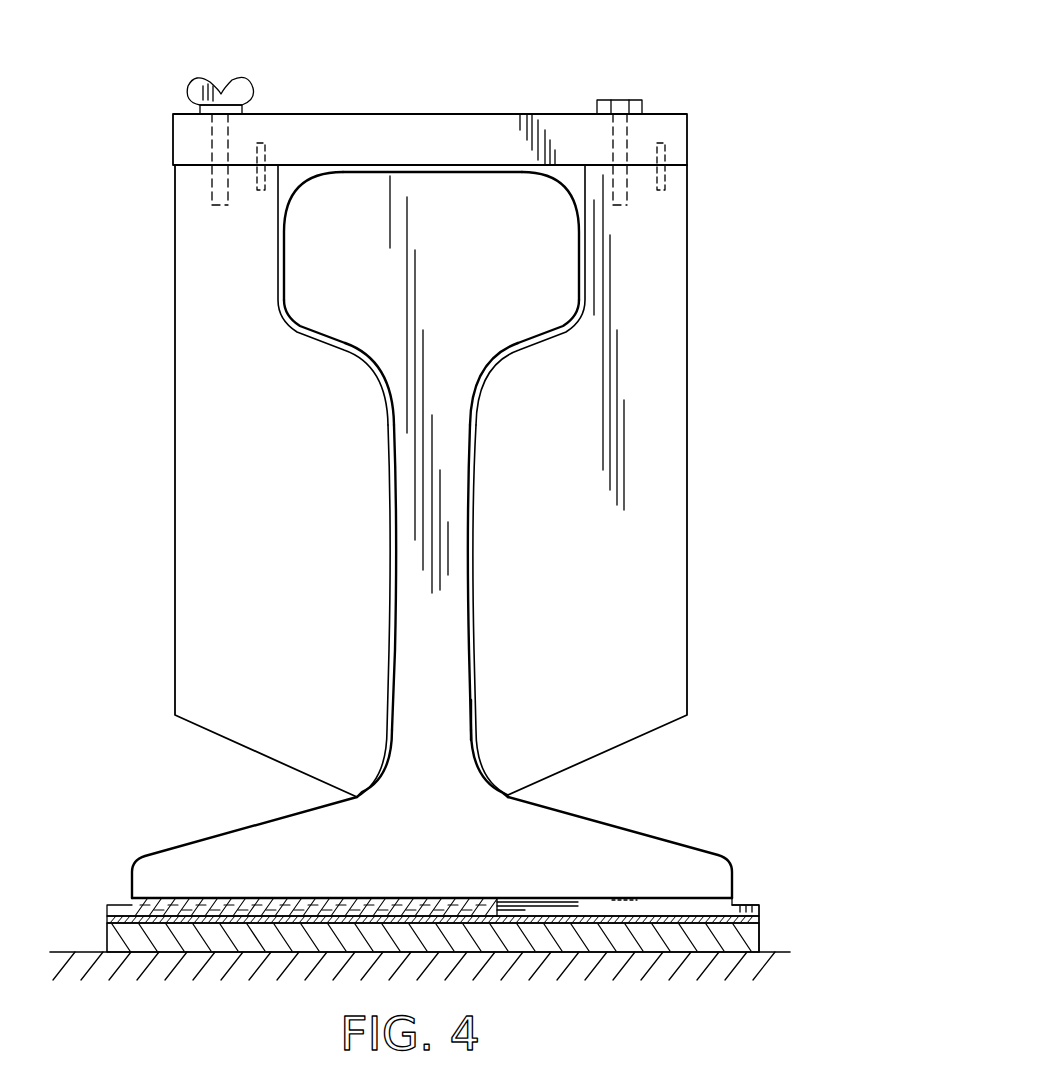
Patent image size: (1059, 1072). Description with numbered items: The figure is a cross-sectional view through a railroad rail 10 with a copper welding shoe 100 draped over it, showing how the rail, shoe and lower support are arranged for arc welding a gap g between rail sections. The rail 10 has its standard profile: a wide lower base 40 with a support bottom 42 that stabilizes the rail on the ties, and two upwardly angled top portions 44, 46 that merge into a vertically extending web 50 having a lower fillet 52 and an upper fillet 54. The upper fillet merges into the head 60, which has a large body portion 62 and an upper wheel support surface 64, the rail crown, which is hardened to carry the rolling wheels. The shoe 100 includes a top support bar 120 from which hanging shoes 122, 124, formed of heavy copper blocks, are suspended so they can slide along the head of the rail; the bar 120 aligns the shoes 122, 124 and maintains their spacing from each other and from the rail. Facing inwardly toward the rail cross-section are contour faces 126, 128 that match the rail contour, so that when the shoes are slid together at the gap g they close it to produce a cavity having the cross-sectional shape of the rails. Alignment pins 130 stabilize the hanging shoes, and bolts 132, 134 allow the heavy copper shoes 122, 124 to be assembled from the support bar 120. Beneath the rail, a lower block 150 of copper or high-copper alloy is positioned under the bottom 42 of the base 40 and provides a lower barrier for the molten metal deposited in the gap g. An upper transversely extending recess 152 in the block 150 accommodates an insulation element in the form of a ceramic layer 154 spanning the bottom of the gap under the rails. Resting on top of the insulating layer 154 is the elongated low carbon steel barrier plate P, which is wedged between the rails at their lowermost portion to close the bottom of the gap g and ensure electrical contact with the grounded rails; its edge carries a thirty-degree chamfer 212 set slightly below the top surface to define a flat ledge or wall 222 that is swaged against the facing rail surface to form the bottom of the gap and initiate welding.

The rail 10 is at (440, 526).
The lower base 40 is at (440, 897).
The support bottom 42 is at (206, 920).
The upwardly angled top portion 44 is at (608, 830).
The upwardly angled top portion 46 is at (262, 828).
The web 50 is at (465, 567).
The lower fillet 52 is at (492, 780).
The upper fillet 54 is at (485, 372).
The head 60 is at (513, 305).
The body portion 62 is at (430, 210).
The upper wheel support surface 64 is at (383, 168).
The copper shoe 100 is at (426, 398).
The top support bar 120 is at (552, 118).
The hanging shoe 122 is at (688, 395).
The hanging shoe 124 is at (175, 427).
The contour face 126 is at (497, 352).
The contour face 128 is at (393, 502).
The alignment pin 130 is at (255, 178).
The bolt 132 is at (618, 100).
The bolt 134 is at (238, 88).
The lower block 150 is at (497, 949).
The upper transversely extending recess 152 is at (760, 908).
The ceramic layer 154 is at (683, 923).
The chamfer 212 is at (585, 910).
The flat ledge or wall 222 is at (527, 900).
The barrier plate P is at (385, 895).
The gap g is at (458, 722).